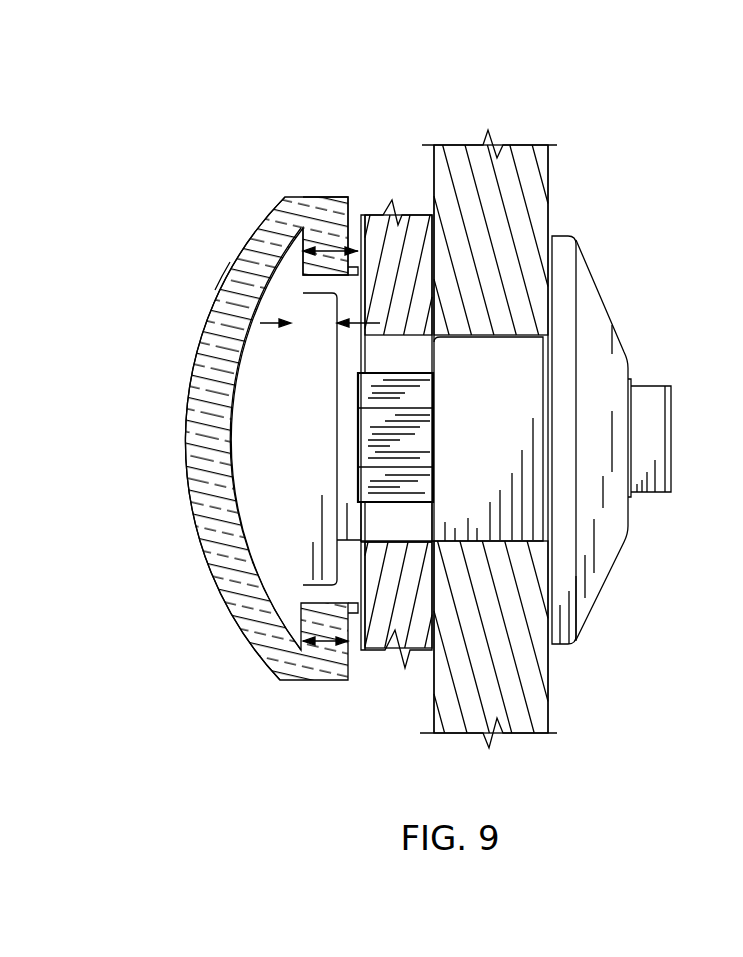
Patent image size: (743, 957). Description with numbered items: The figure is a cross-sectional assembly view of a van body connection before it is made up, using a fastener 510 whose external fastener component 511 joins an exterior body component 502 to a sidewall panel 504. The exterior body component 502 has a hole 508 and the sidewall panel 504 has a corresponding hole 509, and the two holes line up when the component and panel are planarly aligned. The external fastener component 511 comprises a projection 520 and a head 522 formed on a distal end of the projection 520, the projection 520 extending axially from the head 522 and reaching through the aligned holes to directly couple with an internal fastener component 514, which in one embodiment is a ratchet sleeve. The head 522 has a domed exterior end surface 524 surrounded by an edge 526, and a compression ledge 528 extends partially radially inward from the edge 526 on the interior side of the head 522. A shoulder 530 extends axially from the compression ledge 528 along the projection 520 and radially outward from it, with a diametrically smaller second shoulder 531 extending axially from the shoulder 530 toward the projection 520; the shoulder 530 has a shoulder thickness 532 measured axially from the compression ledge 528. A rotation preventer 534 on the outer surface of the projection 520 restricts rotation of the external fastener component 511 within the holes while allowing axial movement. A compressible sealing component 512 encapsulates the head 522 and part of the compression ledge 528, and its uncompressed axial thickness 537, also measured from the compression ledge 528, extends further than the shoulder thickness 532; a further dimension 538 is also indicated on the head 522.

The exterior body component 502 is at (367, 407).
The sidewall panel 504 is at (457, 409).
The hole 508 is at (398, 275).
The hole 509 is at (491, 240).
The fastener 510 is at (231, 394).
The external fastener component 511 is at (231, 378).
The compressible sealing component 512 is at (253, 217).
The internal fastener component 514 is at (625, 280).
The projection 520 is at (360, 525).
The head 522 is at (262, 268).
The exterior end surface 524 is at (237, 380).
The edge 526 is at (310, 243).
The compression ledge 528 is at (316, 242).
The shoulder 530 is at (337, 566).
The second shoulder 531 is at (411, 507).
The shoulder thickness 532 is at (313, 320).
The rotation preventer 534 is at (420, 505).
The uncompressed axial thickness 537 is at (310, 641).
The upper flange width 538 is at (355, 197).